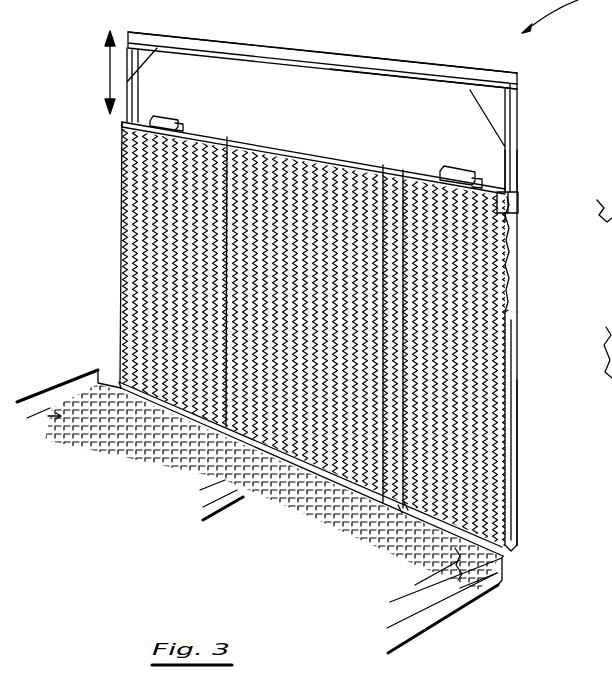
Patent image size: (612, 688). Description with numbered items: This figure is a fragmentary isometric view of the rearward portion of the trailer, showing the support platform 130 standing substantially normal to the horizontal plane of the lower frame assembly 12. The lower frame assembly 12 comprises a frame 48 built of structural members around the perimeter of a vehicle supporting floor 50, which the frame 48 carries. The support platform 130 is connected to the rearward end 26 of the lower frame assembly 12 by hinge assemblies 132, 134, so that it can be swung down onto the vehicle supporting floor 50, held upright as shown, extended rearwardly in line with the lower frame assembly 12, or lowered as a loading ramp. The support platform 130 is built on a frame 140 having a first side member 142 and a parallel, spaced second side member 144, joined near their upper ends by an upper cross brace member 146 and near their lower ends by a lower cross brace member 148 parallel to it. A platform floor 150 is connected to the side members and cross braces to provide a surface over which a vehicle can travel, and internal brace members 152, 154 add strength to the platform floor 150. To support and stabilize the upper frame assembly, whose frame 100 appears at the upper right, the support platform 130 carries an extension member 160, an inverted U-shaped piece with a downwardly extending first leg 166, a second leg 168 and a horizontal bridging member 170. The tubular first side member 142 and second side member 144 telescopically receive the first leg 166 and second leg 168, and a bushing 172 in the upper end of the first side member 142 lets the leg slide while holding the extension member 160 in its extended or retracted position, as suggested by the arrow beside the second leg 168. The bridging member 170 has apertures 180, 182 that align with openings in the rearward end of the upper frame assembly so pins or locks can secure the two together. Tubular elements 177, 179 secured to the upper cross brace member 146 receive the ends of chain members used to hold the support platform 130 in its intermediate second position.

The lower frame assembly 12 is at (466, 618).
The rearward end 26 is at (520, 546).
The frame 48 is at (488, 591).
The vehicle supporting floor 50 is at (505, 581).
The frame 100 is at (599, 289).
The support platform 130 is at (526, 318).
The hinge assembly 132 is at (468, 518).
The hinge assembly 134 is at (120, 382).
The frame 140 is at (519, 387).
The first side member 142 is at (517, 457).
The second side member 144 is at (120, 191).
The upper cross brace member 146 is at (356, 162).
The lower cross brace member 148 is at (480, 527).
The platform floor 150 is at (482, 256).
The internal brace member 152 is at (404, 192).
The internal brace member 154 is at (232, 171).
The extension member 160 is at (519, 96).
The first leg 166 is at (517, 158).
The second leg 168 is at (141, 90).
The bridging member 170 is at (324, 50).
The bushing 172 is at (518, 193).
The tubular element 177 is at (463, 170).
The tubular element 179 is at (174, 120).
The aperture 180 is at (452, 70).
The aperture 182 is at (181, 38).